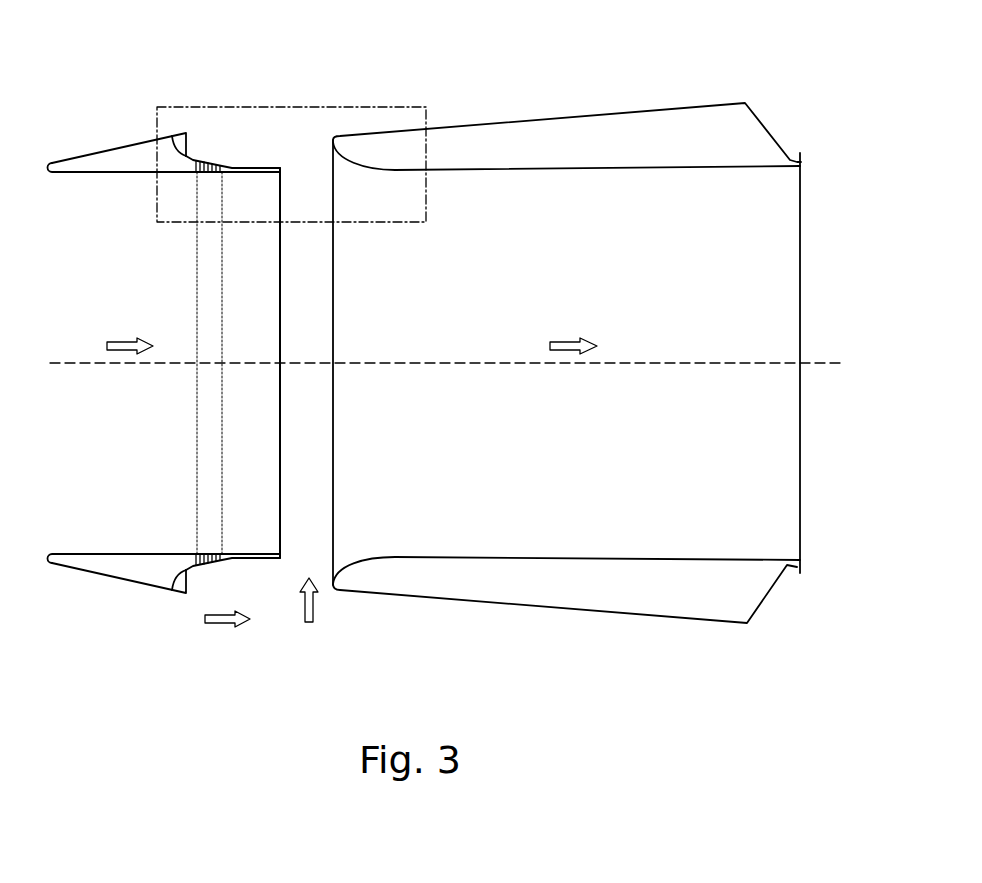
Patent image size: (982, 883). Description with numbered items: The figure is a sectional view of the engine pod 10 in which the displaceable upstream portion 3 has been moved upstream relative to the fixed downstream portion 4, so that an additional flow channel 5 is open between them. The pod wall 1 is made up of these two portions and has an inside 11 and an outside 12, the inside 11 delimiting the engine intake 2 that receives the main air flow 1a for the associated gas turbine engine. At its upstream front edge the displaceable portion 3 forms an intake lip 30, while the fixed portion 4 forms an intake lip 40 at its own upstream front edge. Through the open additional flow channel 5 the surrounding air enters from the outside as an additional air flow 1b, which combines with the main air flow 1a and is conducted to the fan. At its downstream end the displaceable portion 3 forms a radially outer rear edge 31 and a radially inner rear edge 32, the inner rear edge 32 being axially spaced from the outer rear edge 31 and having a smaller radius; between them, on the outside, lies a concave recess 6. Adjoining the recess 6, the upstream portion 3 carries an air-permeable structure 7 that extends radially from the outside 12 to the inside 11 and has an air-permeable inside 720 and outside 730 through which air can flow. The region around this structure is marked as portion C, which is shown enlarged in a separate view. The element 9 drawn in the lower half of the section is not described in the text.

The pod wall 1 is at (475, 118).
The main air flow 1a is at (130, 343).
The additional air flow 1b is at (305, 622).
The engine intake 2 is at (227, 628).
The displaceable upstream portion 3 is at (178, 368).
The fixed downstream portion 4 is at (678, 128).
The additional flow channel 5 is at (319, 125).
The recess 6 is at (193, 157).
The air-permeable structure 7 is at (212, 302).
The lower flap 9 is at (160, 592).
The engine pod 10 is at (430, 62).
The inside 11 is at (610, 166).
The outside 12 is at (580, 117).
The intake lip 30 is at (64, 160).
The radially outer rear edge 31 is at (184, 152).
The radially inner rear edge 32 is at (253, 167).
The intake lip 40 is at (340, 140).
The inside of air-permeable structure 720 is at (207, 170).
The outside of air-permeable structure 730 is at (210, 165).
The portion C is at (283, 107).